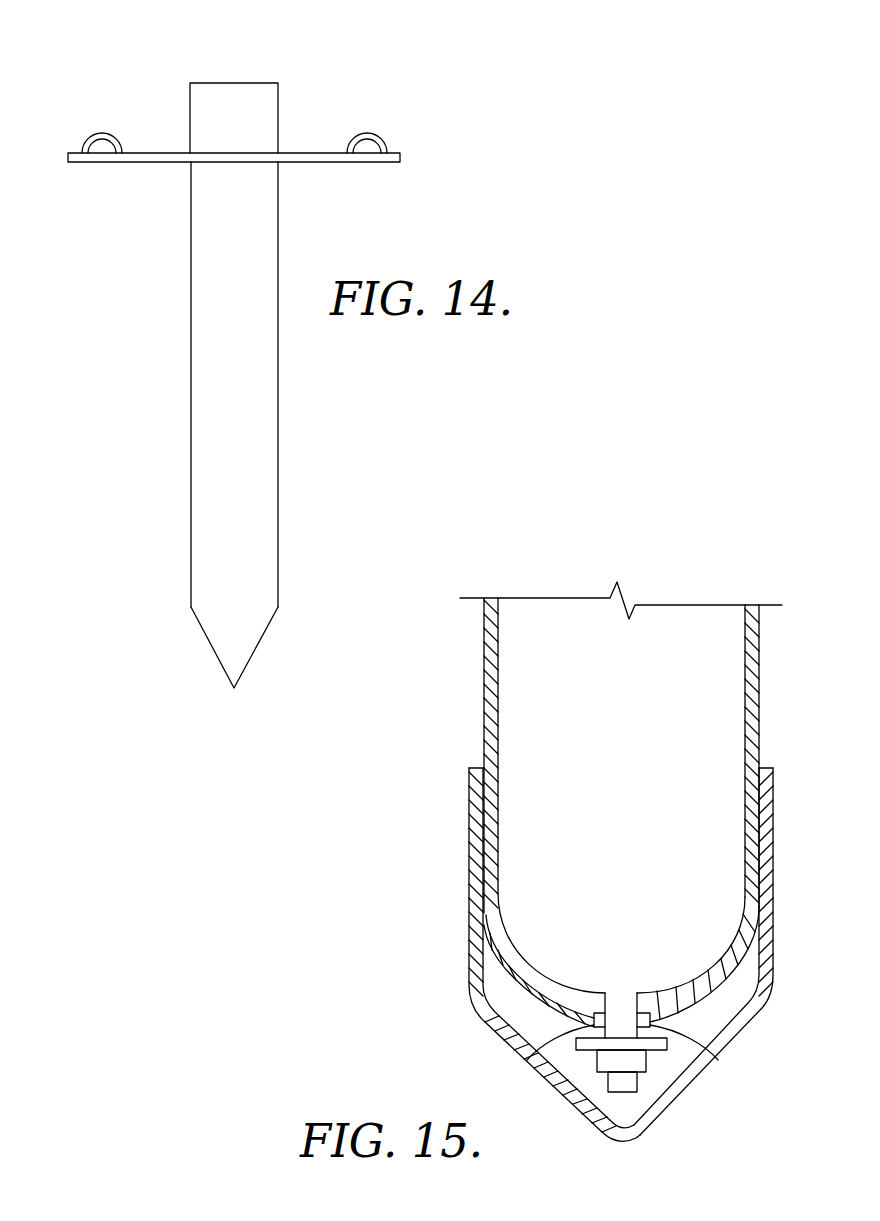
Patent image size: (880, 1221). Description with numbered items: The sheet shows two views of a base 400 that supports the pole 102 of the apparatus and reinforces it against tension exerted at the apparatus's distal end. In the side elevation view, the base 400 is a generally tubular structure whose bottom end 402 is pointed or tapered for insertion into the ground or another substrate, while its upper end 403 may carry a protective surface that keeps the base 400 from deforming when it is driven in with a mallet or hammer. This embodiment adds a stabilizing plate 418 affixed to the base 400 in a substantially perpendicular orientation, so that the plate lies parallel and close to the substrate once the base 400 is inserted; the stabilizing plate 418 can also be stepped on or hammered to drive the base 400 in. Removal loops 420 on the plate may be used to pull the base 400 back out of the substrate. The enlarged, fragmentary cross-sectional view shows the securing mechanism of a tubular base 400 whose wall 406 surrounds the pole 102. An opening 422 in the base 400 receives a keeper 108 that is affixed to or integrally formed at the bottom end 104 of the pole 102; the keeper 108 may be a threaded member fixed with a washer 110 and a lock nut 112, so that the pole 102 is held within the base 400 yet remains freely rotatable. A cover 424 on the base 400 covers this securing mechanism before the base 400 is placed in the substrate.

In FIG. 14, the base 400 is at (118, 73).
In FIG. 15, the base 400 is at (433, 666).
In FIG. 14, the bottom end 402 is at (234, 688).
In FIG. 14, the upper end 403 is at (235, 82).
In FIG. 14, the shaft / container wall 406 is at (207, 218).
In FIG. 15, the shaft / container wall 406 is at (753, 682).
In FIG. 14, the stabilizing plate 418 is at (368, 157).
In FIG. 14, the removal loops 420 is at (105, 131).
In FIG. 15, the pole 102 is at (522, 740).
In FIG. 15, the bottom end 104 is at (608, 1093).
In FIG. 15, the keeper 108 is at (623, 1005).
In FIG. 15, the washer 110 is at (670, 1045).
In FIG. 15, the lock nut 112 is at (643, 1060).
In FIG. 15, the opening 422 is at (521, 1063).
In FIG. 15, the cover 424 is at (777, 860).